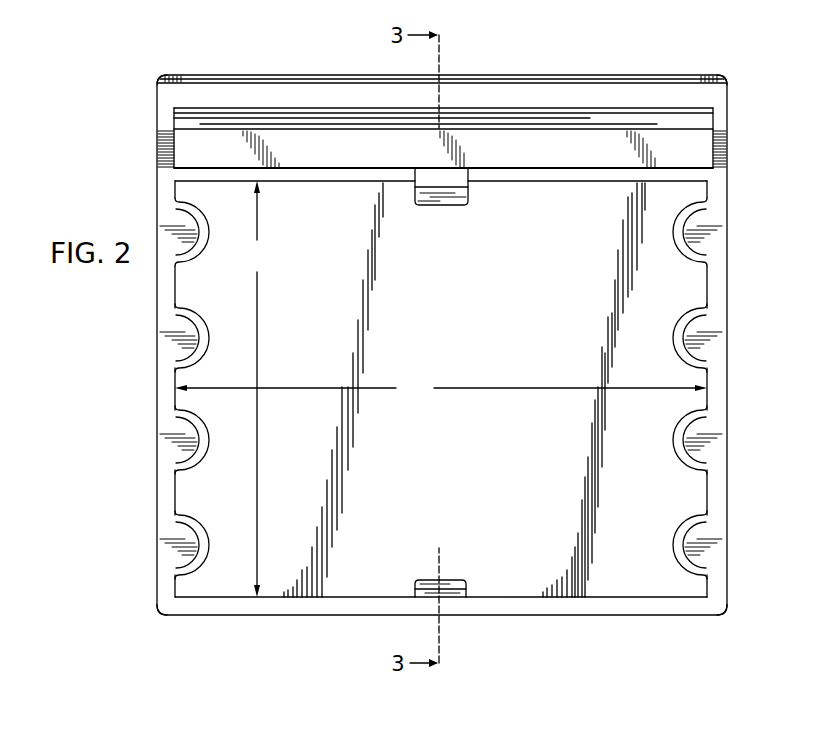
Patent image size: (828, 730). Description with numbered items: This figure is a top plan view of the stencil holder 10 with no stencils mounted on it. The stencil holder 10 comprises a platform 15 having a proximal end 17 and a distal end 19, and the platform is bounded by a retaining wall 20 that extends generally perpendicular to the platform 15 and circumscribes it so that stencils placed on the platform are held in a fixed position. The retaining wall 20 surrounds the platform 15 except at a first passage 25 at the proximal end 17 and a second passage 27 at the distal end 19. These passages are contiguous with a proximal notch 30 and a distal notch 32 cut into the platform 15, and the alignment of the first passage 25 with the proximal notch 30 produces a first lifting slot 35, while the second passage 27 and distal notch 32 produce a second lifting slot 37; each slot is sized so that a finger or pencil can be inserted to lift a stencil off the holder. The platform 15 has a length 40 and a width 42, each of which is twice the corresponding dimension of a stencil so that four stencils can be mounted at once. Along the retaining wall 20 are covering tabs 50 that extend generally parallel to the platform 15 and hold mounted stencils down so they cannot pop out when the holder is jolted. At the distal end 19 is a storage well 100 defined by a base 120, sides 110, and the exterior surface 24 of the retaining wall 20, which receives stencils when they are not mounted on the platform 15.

The stencil holder 10 is at (542, 538).
The platform 15 is at (640, 582).
The proximal end 17 is at (265, 617).
The distal end 19 is at (213, 170).
The retaining wall 20 is at (157, 590).
The exterior surface 24 is at (610, 173).
The first passage 25 is at (455, 588).
The second passage 27 is at (423, 200).
The proximal notch 30 is at (462, 590).
The distal notch 32 is at (447, 176).
The first lifting slot 35 is at (420, 610).
The second lifting slot 37 is at (468, 168).
The length 40 is at (441, 388).
The width 42 is at (257, 389).
The covering tabs 50 is at (157, 232).
The storage well 100 is at (678, 142).
The sides 110 is at (258, 78).
The base 120 is at (563, 143).